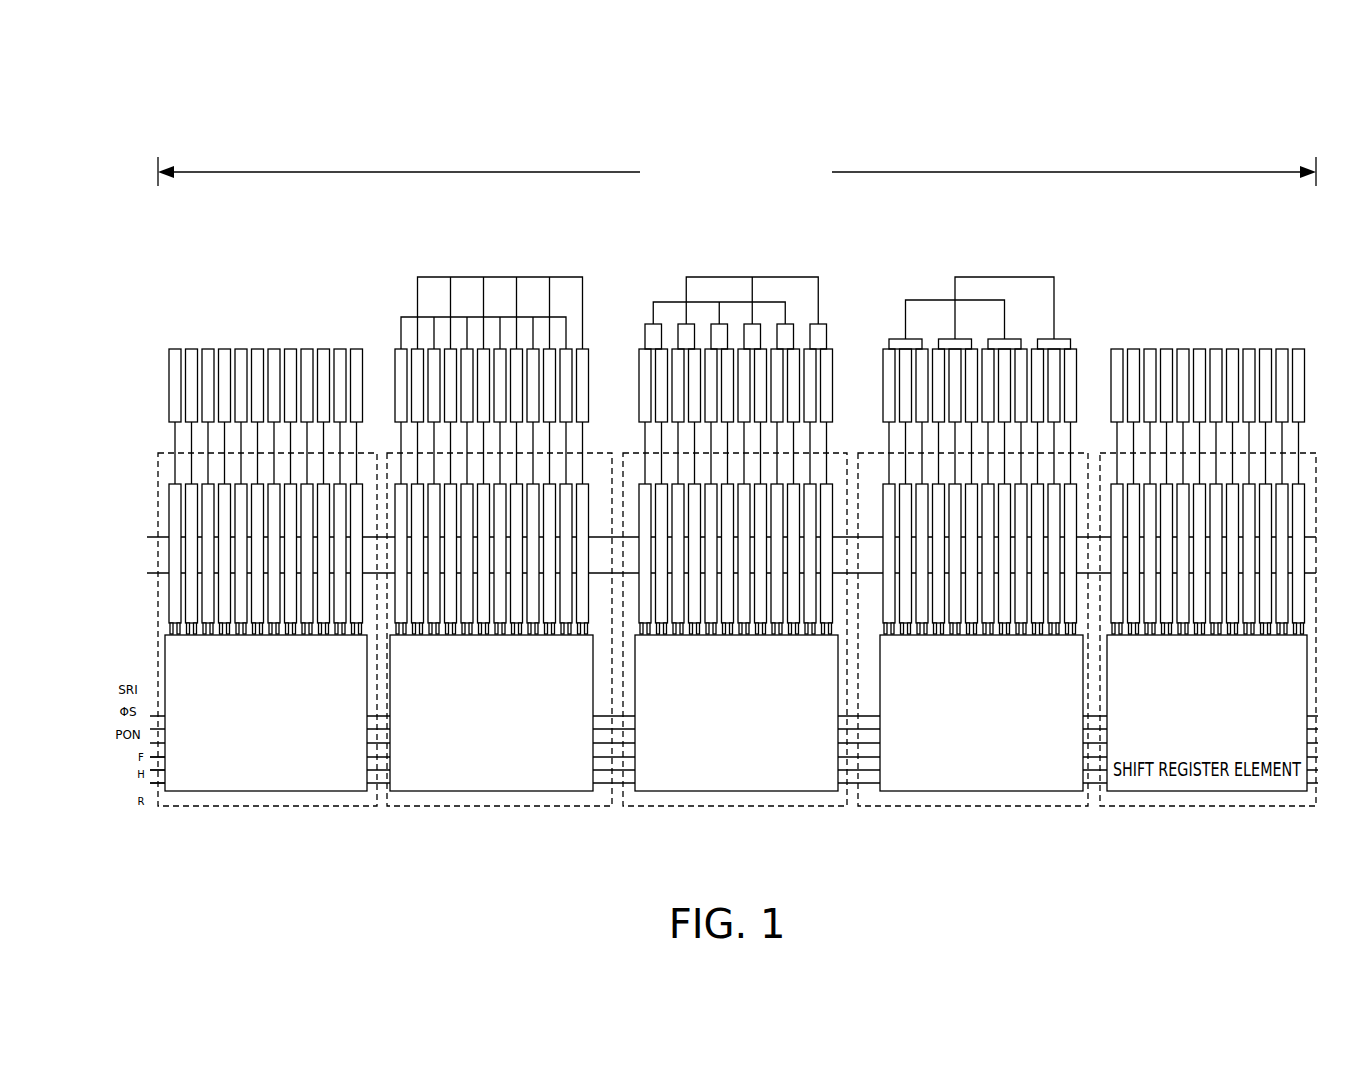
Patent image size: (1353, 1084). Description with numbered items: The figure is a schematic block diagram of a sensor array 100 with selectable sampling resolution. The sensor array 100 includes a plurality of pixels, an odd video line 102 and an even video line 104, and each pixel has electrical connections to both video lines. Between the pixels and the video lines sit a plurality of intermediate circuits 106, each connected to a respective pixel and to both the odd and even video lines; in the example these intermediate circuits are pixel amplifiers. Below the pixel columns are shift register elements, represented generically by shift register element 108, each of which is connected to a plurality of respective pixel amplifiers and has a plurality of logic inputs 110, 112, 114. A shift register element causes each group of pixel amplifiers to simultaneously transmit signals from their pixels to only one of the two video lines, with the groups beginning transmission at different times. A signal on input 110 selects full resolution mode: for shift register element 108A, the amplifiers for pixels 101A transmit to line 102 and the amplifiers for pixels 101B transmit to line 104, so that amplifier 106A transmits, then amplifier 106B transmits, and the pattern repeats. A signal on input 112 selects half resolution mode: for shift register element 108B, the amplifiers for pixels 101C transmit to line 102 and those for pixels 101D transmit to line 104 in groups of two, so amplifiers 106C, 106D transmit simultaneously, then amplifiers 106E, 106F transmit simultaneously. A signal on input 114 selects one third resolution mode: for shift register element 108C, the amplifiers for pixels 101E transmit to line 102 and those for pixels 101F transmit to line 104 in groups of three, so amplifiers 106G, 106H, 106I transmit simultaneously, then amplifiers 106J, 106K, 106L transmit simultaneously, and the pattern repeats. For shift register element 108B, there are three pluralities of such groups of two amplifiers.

The sensor array 100 is at (1216, 148).
The pixels 101A is at (398, 308).
The pixels 101B is at (577, 270).
The pixels 101C is at (649, 296).
The pixels 101D is at (812, 270).
The pixels 101E is at (904, 294).
The pixels 101F is at (1058, 270).
The odd video line 102 is at (147, 537).
The even video line 104 is at (147, 573).
The intermediate circuit 106 is at (318, 340).
The amplifier 106A is at (401, 625).
The amplifier 106B is at (418, 625).
The amplifier 106C is at (645, 625).
The amplifier 106D is at (662, 625).
The amplifier 106E is at (679, 625).
The amplifier 106F is at (695, 625).
The amplifier 106G is at (890, 625).
The amplifier 106H is at (906, 625).
The amplifier 106I is at (922, 625).
The amplifier 106J is at (939, 625).
The amplifier 106K is at (955, 625).
The amplifier 106L is at (972, 625).
The shift register element 108 is at (240, 793).
The shift register element 108A is at (483, 793).
The shift register element 108B is at (727, 793).
The shift register element 108C is at (978, 793).
The logic input 110 is at (162, 757).
The logic input 112 is at (162, 770).
The logic input 114 is at (162, 784).